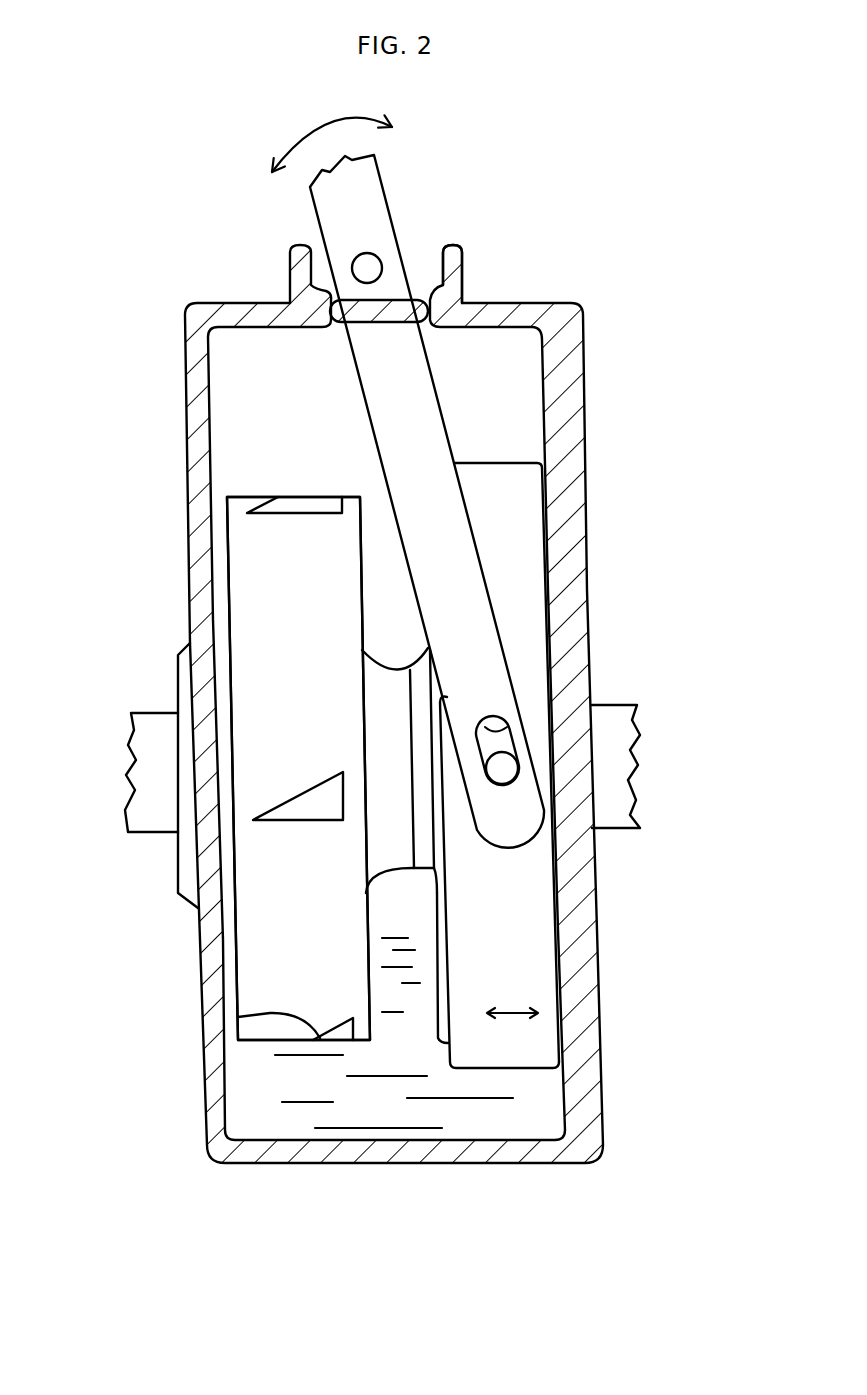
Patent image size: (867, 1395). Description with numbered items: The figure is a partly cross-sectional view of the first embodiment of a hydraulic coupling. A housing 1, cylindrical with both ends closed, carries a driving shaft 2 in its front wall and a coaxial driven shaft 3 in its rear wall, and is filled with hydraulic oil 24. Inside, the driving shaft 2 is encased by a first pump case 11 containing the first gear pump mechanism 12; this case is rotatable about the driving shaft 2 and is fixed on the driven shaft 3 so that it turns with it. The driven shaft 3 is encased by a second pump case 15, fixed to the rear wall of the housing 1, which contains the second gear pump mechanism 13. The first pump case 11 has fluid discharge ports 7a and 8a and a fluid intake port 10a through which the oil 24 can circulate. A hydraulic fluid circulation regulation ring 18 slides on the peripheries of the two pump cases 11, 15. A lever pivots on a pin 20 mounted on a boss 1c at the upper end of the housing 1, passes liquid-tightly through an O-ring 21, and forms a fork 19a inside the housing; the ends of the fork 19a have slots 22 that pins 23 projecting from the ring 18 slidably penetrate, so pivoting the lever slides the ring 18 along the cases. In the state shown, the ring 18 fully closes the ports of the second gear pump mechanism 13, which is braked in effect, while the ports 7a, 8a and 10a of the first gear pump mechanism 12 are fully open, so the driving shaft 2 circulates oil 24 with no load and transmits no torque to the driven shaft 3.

The housing 1 is at (583, 1092).
The boss 1c is at (452, 248).
The driving shaft 2 is at (153, 813).
The driven shaft 3 is at (605, 790).
The fluid discharge port 7a is at (263, 500).
The fluid discharge port 8a is at (270, 1013).
The fluid intake port 10a is at (295, 793).
The first pump case 11 is at (263, 920).
The first gear pump mechanism 12 is at (253, 625).
The second gear pump mechanism 13 is at (435, 1035).
The second pump case 15 is at (443, 1010).
The hydraulic fluid circulation regulation ring 18 is at (513, 1060).
The fork 19a is at (407, 403).
The pin 20 is at (367, 268).
The O-ring 21 is at (458, 280).
The slot 22 is at (510, 722).
The pin 23 is at (500, 767).
The oil 24 is at (465, 1128).